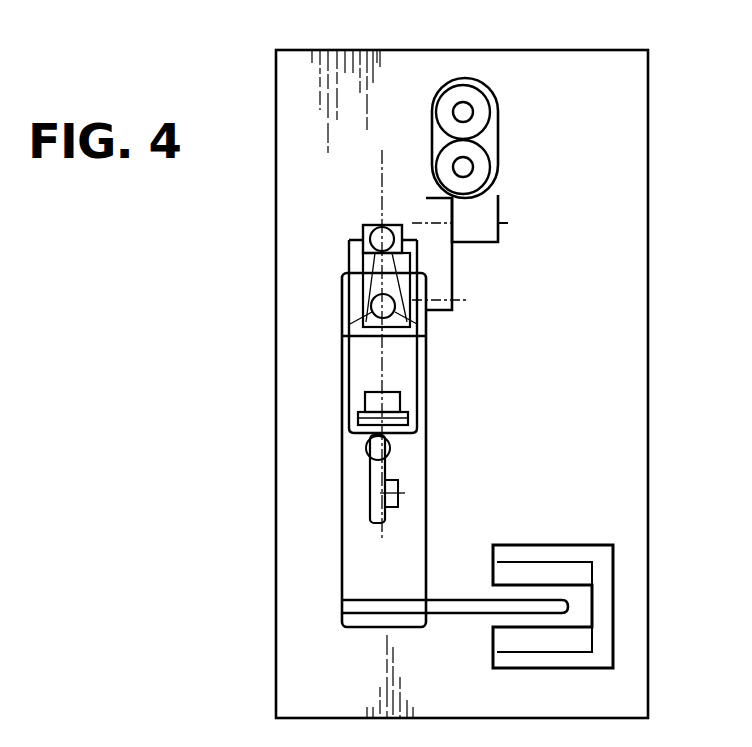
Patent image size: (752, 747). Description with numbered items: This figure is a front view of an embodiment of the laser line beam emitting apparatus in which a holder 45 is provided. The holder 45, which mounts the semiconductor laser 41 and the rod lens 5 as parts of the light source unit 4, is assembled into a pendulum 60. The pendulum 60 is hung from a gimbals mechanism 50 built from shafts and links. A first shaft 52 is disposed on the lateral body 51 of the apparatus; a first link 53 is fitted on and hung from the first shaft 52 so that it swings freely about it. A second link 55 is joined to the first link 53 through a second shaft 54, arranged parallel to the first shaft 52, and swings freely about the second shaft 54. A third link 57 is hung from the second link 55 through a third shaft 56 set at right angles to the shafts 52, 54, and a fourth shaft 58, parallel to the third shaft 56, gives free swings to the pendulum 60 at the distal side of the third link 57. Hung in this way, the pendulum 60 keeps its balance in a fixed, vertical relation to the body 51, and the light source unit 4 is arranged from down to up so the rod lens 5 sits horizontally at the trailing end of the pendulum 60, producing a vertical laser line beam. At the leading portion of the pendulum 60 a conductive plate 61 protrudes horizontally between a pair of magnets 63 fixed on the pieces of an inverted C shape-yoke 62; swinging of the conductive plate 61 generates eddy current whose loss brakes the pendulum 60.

The light source unit 4 is at (325, 295).
The rod lens 5 is at (370, 216).
The semiconductor laser 41 is at (394, 402).
The holder 45 is at (418, 392).
The gimbals mechanism 50 is at (470, 180).
The lateral body 51 is at (627, 213).
The first shaft 52 is at (503, 100).
The first link 53 is at (488, 137).
The second shaft 54 is at (488, 165).
The second link 55 is at (498, 203).
The third shaft 56 is at (498, 240).
The third link 57 is at (443, 260).
The fourth shaft 58 is at (458, 301).
The pendulum 60 is at (342, 487).
The conductive plate 61 is at (460, 609).
The inverted C shape-yoke 62 is at (601, 596).
The magnets 63 is at (575, 571).